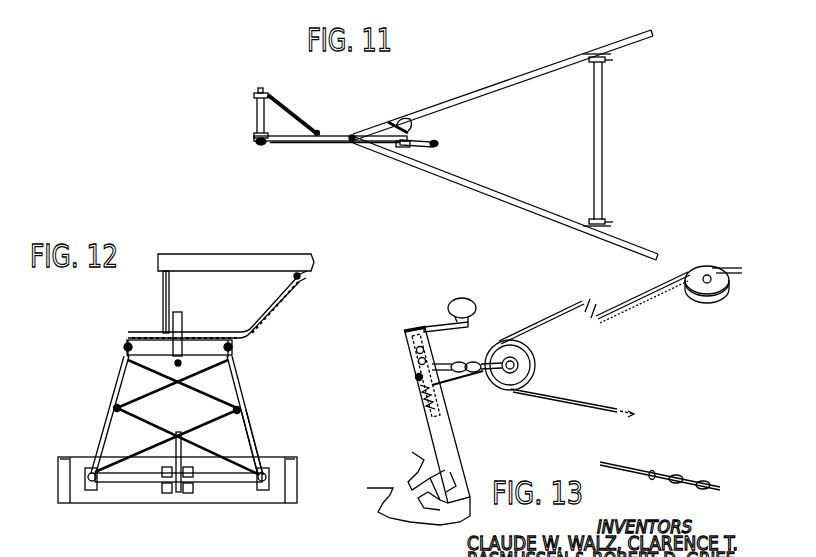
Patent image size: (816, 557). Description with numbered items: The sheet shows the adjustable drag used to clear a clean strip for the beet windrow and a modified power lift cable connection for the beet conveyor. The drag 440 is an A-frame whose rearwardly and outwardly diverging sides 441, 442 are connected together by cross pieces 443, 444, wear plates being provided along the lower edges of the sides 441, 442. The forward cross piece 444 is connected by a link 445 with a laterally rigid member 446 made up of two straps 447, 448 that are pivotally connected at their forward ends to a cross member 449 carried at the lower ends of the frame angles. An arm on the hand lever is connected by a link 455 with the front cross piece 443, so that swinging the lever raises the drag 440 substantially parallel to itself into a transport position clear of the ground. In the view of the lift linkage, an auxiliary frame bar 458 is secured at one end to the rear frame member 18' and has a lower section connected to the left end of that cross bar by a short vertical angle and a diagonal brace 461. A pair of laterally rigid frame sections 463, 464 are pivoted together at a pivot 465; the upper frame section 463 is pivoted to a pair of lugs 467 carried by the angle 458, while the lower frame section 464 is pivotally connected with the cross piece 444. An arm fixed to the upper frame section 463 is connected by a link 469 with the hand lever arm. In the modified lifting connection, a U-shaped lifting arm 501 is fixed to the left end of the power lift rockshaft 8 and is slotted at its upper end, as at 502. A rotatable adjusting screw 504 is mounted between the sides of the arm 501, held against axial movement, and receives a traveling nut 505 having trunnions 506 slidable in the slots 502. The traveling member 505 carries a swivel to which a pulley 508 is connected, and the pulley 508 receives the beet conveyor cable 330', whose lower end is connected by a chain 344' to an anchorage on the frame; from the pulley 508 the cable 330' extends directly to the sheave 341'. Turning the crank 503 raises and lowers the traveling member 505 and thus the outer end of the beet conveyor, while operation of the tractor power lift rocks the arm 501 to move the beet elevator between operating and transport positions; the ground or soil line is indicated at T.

In FIG. 11, the side 441 is at (510, 83).
In FIG. 12, the side 441 is at (275, 466).
In FIG. 11, the side 442 is at (485, 190).
In FIG. 12, the side 442 is at (75, 463).
In FIG. 11, the front cross piece 443 is at (405, 125).
In FIG. 11, the forward cross piece 444 is at (598, 112).
In FIG. 12, the forward cross piece 444 is at (215, 482).
In FIG. 11, the link 445 is at (349, 135).
In FIG. 12, the link 445 is at (176, 436).
In FIG. 11, the laterally rigid member 446 is at (280, 148).
In FIG. 11, the strap 447 is at (298, 143).
In FIG. 11, the strap 448 is at (290, 117).
In FIG. 11, the cross member 449 is at (257, 116).
In FIG. 11, the link 455 is at (426, 142).
In FIG. 12, the rear frame member 18' is at (236, 242).
In FIG. 12, the diagonal brace 461 is at (160, 300).
In FIG. 12, the auxiliary frame bar 458 is at (208, 336).
In FIG. 12, the link 469 is at (183, 318).
In FIG. 12, the lugs 467 is at (125, 349).
In FIG. 12, the upper frame section 463 is at (242, 380).
In FIG. 12, the lower frame section 464 is at (251, 432).
In FIG. 12, the pivot 465 is at (114, 408).
In FIG. 12, the drag 440 is at (118, 507).
In FIG. 13, the crank 503 is at (445, 325).
In FIG. 13, the U-shaped lifting arm 501 is at (432, 428).
In FIG. 13, the slot 502 is at (425, 364).
In FIG. 13, the adjusting screw 504 is at (441, 397).
In FIG. 13, the traveling nut 505 is at (417, 395).
In FIG. 13, the trunnions 506 is at (414, 380).
In FIG. 13, the pulley 508 is at (527, 363).
In FIG. 13, the beet conveyor cable 330' is at (594, 341).
In FIG. 13, the sheave 341' is at (705, 305).
In FIG. 13, the chain 344' is at (660, 463).
In FIG. 13, the soil surface T is at (378, 485).
In FIG. 13, the power lift rockshaft 8 is at (420, 496).